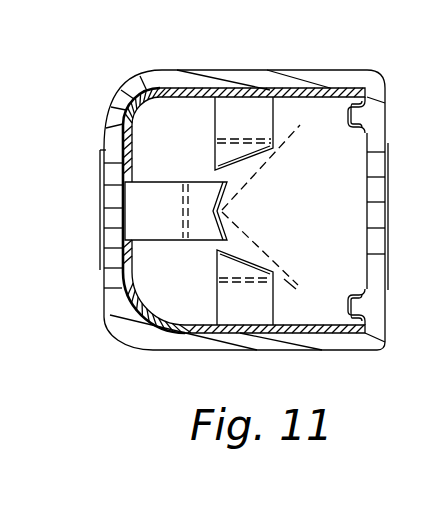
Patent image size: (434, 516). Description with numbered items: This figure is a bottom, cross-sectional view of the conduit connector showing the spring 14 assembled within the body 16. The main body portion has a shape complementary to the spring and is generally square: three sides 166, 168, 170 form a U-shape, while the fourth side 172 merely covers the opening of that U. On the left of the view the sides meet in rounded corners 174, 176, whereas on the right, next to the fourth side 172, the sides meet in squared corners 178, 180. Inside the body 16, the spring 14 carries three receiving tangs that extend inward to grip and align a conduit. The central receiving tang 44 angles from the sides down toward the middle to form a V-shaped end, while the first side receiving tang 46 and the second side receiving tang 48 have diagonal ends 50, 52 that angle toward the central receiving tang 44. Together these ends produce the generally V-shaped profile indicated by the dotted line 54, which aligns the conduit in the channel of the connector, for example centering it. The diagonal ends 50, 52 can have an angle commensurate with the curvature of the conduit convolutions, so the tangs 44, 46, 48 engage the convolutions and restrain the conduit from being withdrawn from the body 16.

The spring 14 is at (290, 92).
The body 16 is at (370, 114).
The central receiving tang 44 is at (163, 222).
The first side receiving tang 46 is at (254, 129).
The second side receiving tang 48 is at (254, 314).
The diagonal end 50 is at (250, 172).
The diagonal end 52 is at (245, 247).
The dotted line 54 is at (286, 285).
The side 166 is at (237, 76).
The side 168 is at (112, 143).
The side 170 is at (250, 350).
The fourth side 172 is at (375, 295).
The rounded corner 174 is at (127, 90).
The rounded corner 176 is at (130, 333).
The squared corner 178 is at (378, 345).
The squared corner 180 is at (375, 80).